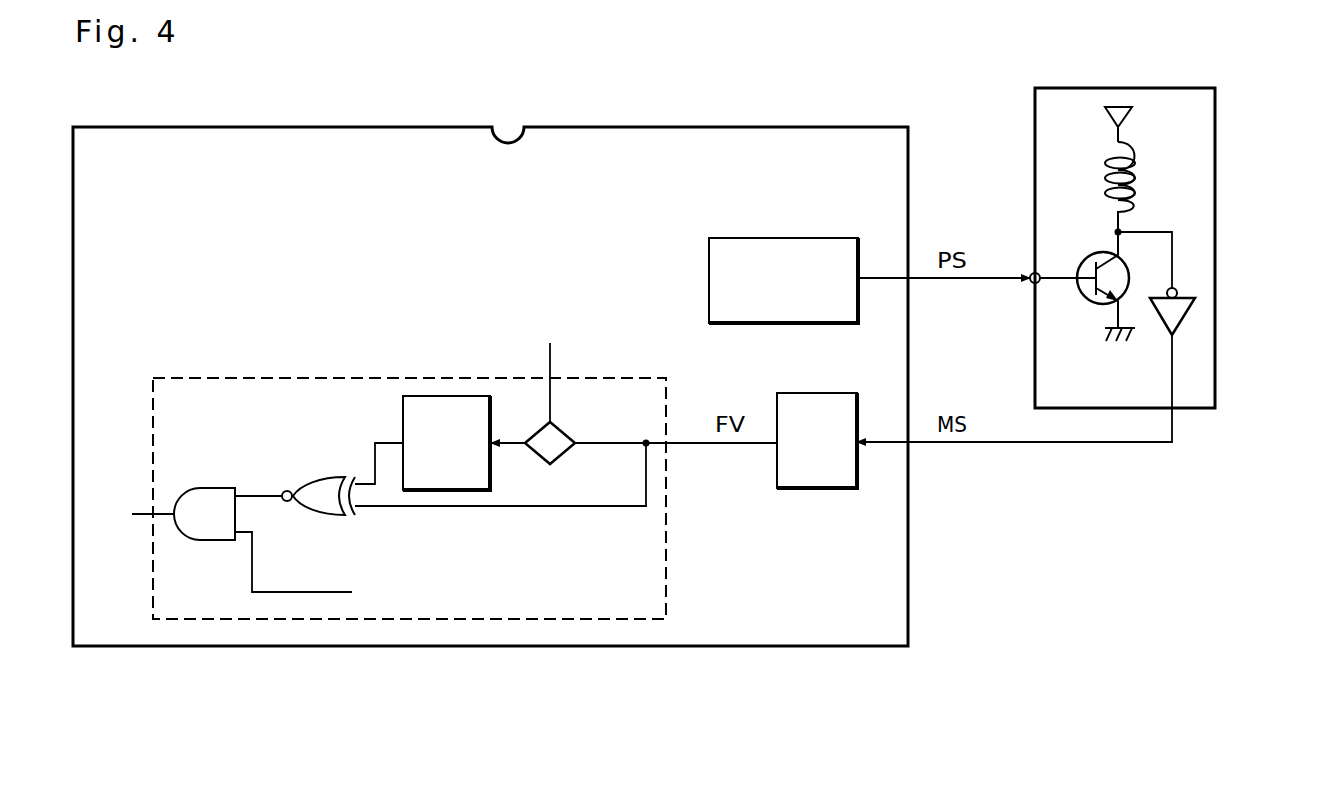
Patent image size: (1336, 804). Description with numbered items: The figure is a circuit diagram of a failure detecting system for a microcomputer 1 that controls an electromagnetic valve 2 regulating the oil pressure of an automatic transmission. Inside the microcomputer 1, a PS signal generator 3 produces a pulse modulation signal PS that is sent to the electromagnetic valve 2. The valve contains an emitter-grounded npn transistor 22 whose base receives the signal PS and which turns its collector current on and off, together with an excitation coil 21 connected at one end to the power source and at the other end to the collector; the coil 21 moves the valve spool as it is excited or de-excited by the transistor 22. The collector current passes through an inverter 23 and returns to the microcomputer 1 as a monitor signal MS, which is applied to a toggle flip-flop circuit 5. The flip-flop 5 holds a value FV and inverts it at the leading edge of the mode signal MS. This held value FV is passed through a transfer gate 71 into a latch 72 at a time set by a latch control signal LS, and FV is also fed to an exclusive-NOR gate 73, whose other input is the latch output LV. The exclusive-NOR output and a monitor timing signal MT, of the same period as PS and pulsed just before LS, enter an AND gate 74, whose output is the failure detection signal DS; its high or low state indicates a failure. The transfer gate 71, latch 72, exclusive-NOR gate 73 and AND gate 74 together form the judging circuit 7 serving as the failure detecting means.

The microcomputer 1 is at (733, 127).
The electromagnetic valve 2 is at (1118, 100).
The excitation coil 21 is at (1135, 178).
The npn transistor 22 is at (1092, 268).
The inverter 23 is at (1178, 312).
The PS signal generator 3 is at (793, 238).
The toggle flip-flop circuit 5 is at (810, 393).
The judging circuit 7 is at (612, 378).
The transfer gate 71 is at (565, 433).
The latch 72 is at (437, 396).
The exclusive-NOR gate 73 is at (337, 478).
The AND gate 74 is at (212, 488).